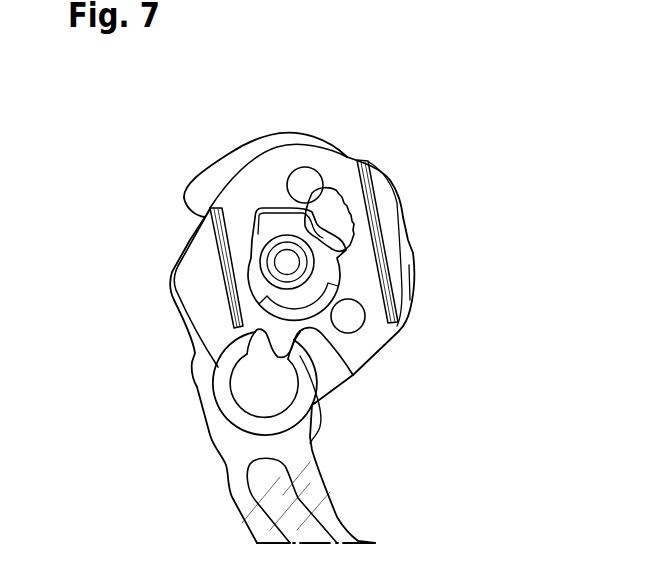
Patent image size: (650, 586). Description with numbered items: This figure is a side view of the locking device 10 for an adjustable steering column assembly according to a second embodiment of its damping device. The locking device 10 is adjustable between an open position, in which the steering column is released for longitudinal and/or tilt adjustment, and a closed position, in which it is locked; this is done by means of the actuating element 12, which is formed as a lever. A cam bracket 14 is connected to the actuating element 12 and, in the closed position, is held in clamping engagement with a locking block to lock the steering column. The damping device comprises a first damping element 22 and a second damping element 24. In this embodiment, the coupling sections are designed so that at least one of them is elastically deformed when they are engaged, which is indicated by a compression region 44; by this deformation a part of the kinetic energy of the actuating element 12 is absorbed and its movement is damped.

The locking device 10 is at (408, 141).
The actuating element 12 is at (243, 502).
The cam bracket 14 is at (326, 196).
The first damping element 22 is at (245, 393).
The second damping element 24 is at (203, 287).
The compression region 44 is at (305, 364).